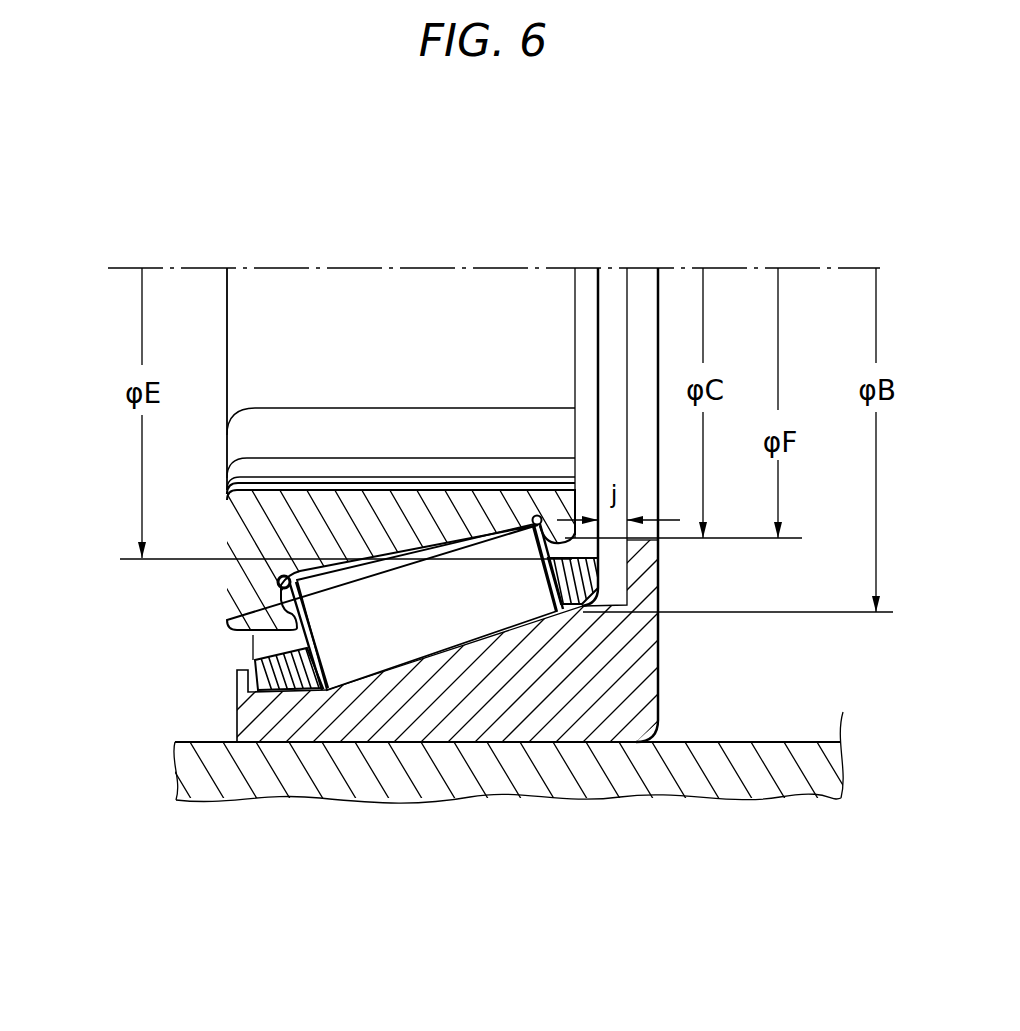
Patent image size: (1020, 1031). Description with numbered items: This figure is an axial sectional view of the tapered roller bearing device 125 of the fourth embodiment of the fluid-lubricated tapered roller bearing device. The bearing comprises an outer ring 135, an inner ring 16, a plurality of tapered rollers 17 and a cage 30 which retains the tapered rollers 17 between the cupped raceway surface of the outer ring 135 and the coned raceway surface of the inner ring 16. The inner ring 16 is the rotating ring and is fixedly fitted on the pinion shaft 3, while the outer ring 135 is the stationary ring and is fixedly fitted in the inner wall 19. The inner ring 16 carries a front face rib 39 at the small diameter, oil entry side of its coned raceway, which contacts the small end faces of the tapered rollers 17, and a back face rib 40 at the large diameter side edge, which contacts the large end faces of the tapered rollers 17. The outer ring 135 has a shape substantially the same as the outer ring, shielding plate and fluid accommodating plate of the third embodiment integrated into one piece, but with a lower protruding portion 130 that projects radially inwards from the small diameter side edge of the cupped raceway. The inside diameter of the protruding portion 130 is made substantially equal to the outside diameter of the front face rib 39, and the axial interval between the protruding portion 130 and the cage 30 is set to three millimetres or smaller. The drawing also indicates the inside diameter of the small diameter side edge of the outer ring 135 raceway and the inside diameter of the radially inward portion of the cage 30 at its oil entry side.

The pinion shaft 3 is at (396, 300).
The inner ring 16 is at (250, 530).
The tapered rollers 17 is at (376, 650).
The inner wall 19 is at (696, 770).
The retainer (cage) 30 is at (253, 655).
The front face rib 39 is at (552, 530).
The back face rib 40 is at (280, 613).
The tapered roller bearing device 125 is at (212, 647).
The protruding portion 130 is at (652, 575).
The outer ring 135 is at (490, 710).